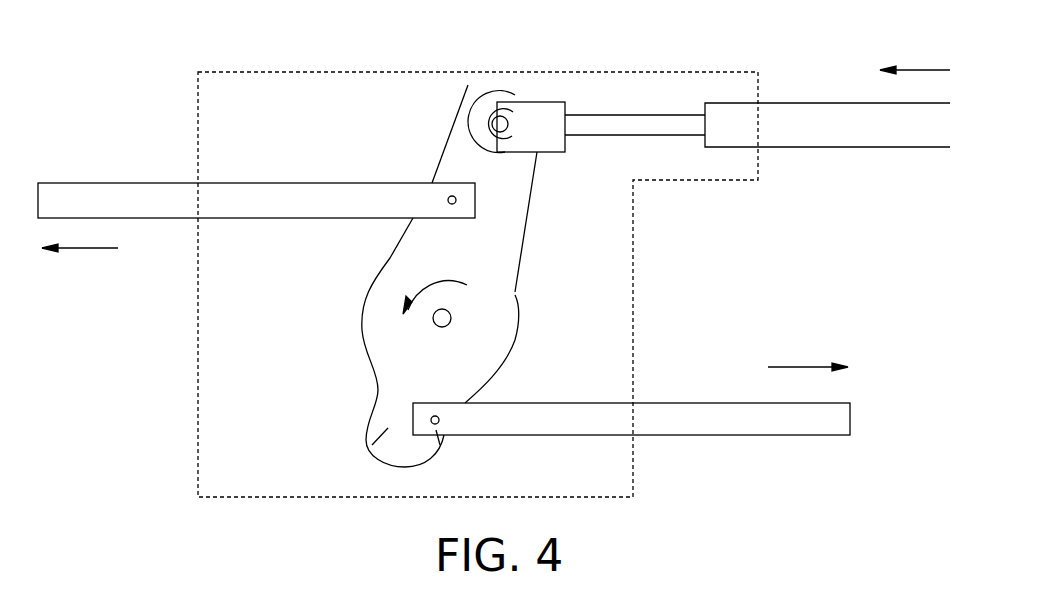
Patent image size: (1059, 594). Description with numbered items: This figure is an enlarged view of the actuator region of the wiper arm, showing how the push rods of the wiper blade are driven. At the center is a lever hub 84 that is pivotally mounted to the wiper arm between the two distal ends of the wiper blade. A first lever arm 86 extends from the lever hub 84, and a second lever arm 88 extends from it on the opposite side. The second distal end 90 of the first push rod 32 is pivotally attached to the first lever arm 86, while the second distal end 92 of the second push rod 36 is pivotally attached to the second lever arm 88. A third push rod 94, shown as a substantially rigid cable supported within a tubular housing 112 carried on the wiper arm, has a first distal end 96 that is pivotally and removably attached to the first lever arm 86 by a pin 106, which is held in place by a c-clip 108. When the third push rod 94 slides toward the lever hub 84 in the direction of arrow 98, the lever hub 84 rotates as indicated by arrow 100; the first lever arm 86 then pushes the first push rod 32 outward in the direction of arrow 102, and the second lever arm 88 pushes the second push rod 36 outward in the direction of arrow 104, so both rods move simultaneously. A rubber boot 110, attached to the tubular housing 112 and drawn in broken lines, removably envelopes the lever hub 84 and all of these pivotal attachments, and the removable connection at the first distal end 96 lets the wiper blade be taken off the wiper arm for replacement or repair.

The first push rod 32 is at (123, 202).
The second push rod 36 is at (757, 418).
The lever hub 84 is at (363, 310).
The first lever arm 86 is at (513, 170).
The second lever arm 88 is at (372, 445).
The second distal end of the first push rod 90 is at (448, 181).
The second distal end of the second push rod 92 is at (440, 445).
The third push rod 94 is at (648, 127).
The first distal end of the third push rod 96 is at (547, 102).
The arrow 98 is at (915, 68).
The arrow 100 is at (420, 285).
The arrow 102 is at (90, 250).
The arrow 104 is at (793, 367).
The pin 106 is at (500, 118).
The c-clip 108 is at (484, 108).
The rubber boot 110 is at (318, 72).
The tubular housing 112 is at (833, 125).